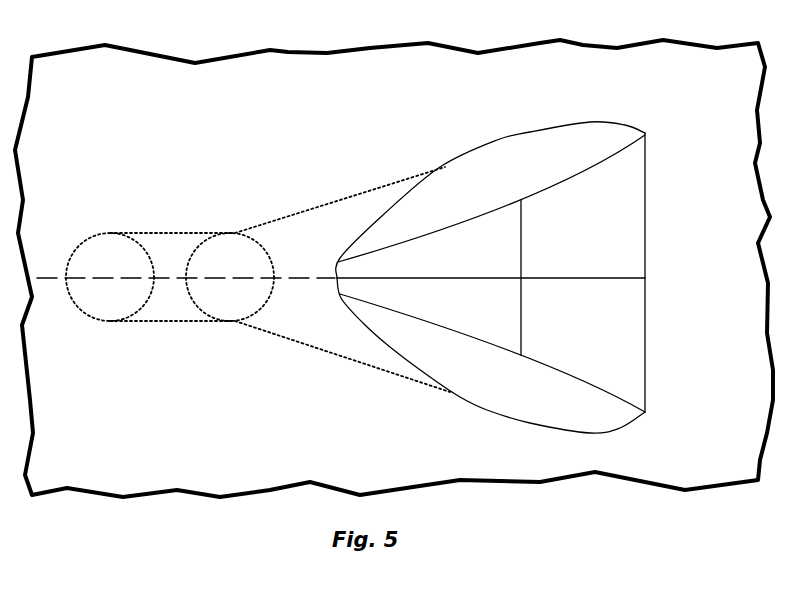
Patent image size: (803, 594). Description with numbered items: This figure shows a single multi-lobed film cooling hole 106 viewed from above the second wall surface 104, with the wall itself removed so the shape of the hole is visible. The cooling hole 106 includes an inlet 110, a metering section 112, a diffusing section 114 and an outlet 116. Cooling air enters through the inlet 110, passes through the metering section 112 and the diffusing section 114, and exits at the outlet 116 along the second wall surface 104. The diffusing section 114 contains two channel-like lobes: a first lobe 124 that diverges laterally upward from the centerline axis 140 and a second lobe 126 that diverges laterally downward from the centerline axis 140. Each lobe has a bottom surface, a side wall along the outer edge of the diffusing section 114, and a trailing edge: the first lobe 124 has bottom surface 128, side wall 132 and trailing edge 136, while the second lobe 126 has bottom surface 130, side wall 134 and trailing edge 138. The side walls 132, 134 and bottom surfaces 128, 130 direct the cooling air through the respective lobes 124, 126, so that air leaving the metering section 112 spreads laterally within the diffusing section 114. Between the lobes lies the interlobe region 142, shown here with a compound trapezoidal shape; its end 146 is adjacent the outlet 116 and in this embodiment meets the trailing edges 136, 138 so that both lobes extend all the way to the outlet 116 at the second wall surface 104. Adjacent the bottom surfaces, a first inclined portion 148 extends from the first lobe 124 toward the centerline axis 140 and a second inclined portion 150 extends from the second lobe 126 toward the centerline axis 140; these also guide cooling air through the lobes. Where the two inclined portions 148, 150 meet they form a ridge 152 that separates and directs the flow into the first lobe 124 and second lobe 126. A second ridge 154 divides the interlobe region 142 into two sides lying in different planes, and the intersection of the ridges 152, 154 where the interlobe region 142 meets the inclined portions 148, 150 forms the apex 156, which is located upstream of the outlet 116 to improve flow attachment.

The second wall surface 104 is at (75, 87).
The cooling hole 106 is at (380, 210).
The inlet 110 is at (102, 308).
The metering section 112 is at (171, 308).
The diffusing section 114 is at (397, 333).
The outlet 116 is at (657, 163).
The first lobe 124 is at (445, 190).
The second lobe 126 is at (443, 360).
The bottom surface 128 is at (540, 163).
The bottom surface 130 is at (542, 393).
The side wall 132 is at (468, 152).
The side wall 134 is at (470, 399).
The trailing edge 136 is at (646, 133).
The trailing edge 138 is at (646, 412).
The centerline axis 140 is at (45, 276).
The interlobe region 142 is at (625, 215).
The end 146 is at (645, 326).
The first inclined portion 148 is at (491, 200).
The second inclined portion 150 is at (492, 349).
The ridge 152 is at (462, 279).
The ridge 154 is at (571, 278).
The apex 156 is at (522, 280).